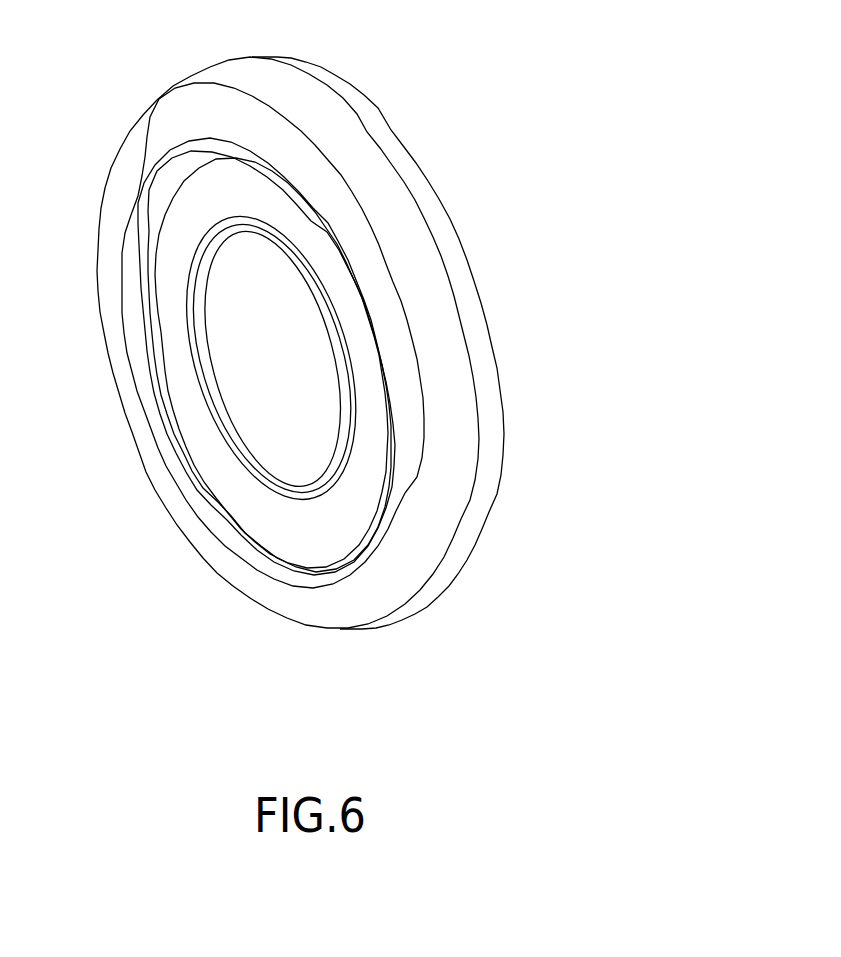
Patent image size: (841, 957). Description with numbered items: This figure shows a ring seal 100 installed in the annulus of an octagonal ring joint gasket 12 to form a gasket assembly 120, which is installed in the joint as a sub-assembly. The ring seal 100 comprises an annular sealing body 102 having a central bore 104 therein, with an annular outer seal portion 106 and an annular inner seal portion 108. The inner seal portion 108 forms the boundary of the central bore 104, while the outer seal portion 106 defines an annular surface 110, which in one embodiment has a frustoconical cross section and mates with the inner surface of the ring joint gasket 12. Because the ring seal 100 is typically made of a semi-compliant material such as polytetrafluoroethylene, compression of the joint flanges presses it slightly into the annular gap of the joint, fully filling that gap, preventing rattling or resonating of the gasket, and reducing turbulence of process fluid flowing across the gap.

The gasket assembly 120 is at (398, 65).
The ring joint gasket 12 is at (410, 226).
The ring seal 100 is at (180, 213).
The annular sealing body 102 is at (173, 340).
The central bore 104 is at (293, 383).
The annular outer seal portion 106 is at (300, 573).
The annular inner seal portion 108 is at (230, 415).
The annular surface 110 is at (203, 323).